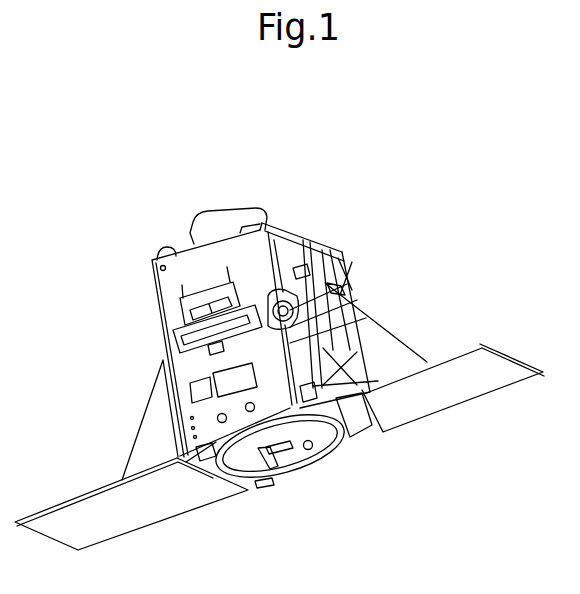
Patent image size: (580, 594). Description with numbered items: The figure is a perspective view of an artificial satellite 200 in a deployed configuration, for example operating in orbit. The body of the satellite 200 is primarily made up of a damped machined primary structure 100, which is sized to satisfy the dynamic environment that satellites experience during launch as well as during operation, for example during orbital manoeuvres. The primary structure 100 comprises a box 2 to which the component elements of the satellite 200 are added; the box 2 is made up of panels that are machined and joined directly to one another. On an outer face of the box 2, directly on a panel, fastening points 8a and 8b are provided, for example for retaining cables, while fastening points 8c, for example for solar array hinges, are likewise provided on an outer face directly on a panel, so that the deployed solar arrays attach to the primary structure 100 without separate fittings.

The primary structure 100 is at (150, 297).
The satellite 200 is at (412, 213).
The box 2 is at (303, 230).
The fastening point 8a is at (308, 273).
The fastening point 8b is at (338, 287).
The fastening point 8c is at (318, 386).